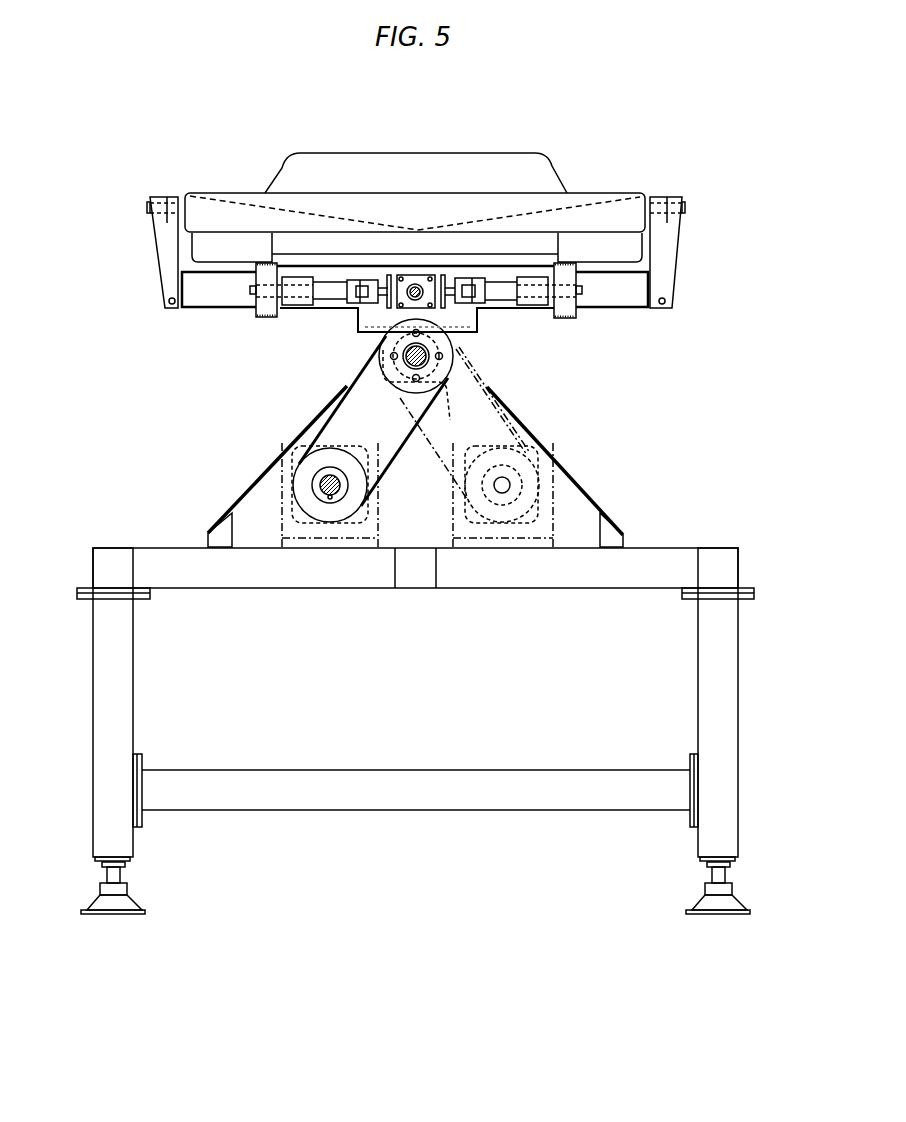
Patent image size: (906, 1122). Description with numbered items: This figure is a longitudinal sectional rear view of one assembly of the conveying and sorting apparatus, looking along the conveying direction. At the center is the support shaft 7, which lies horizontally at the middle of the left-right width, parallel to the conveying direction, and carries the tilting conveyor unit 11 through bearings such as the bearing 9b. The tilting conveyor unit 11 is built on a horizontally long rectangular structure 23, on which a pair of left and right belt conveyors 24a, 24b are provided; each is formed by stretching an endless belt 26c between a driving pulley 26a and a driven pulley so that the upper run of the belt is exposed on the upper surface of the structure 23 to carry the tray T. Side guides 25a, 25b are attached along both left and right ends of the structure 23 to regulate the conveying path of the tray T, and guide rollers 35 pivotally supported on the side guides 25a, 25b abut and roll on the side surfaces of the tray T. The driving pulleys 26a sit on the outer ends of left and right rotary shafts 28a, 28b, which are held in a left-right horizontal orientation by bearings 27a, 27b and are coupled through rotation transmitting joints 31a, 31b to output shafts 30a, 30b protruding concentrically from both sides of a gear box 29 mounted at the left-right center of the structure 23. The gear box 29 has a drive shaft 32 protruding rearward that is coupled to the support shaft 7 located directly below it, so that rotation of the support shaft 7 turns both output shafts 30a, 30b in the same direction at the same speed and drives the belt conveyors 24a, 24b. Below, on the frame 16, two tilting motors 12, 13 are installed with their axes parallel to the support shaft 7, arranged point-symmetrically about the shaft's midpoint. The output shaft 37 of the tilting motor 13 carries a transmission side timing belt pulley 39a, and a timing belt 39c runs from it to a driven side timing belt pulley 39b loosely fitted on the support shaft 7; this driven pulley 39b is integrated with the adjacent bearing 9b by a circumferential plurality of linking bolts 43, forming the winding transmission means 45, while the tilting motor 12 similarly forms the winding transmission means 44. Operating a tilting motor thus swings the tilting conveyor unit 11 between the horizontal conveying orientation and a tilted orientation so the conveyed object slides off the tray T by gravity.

The tilting conveyor unit 11 is at (138, 233).
The tilting motor 12 is at (530, 522).
The tilting motor 13 is at (300, 522).
The frame 16 is at (375, 573).
The structure 23 is at (306, 256).
The belt conveyor 24a is at (263, 256).
The belt conveyor 24b is at (568, 256).
The side guide 25a is at (163, 257).
The side guide 25b is at (670, 255).
The driving pulley 26a is at (255, 280).
The endless belt 26c is at (258, 303).
The bearing 27a is at (297, 303).
The bearing 27b is at (532, 300).
The rotary shaft 28a is at (327, 300).
The rotary shaft 28b is at (507, 284).
The gear box 29 is at (410, 288).
The output shaft 30a is at (381, 286).
The output shaft 30b is at (450, 287).
The rotation transmitting joint 31a is at (353, 284).
The rotation transmitting joint 31b is at (482, 284).
The drive shaft 32 is at (425, 280).
The guide roller 35 is at (167, 200).
The output shaft 37 is at (320, 487).
The transmission side timing belt pulley 39a is at (306, 466).
The driven side timing belt pulley 39b is at (455, 375).
The timing belt 39c is at (398, 456).
The linking bolt 43 is at (442, 356).
The winding transmission means 44 is at (510, 413).
The winding transmission means 45 is at (320, 413).
The support shaft 7 is at (408, 348).
The bearing 9b is at (446, 395).
The tray T is at (633, 243).